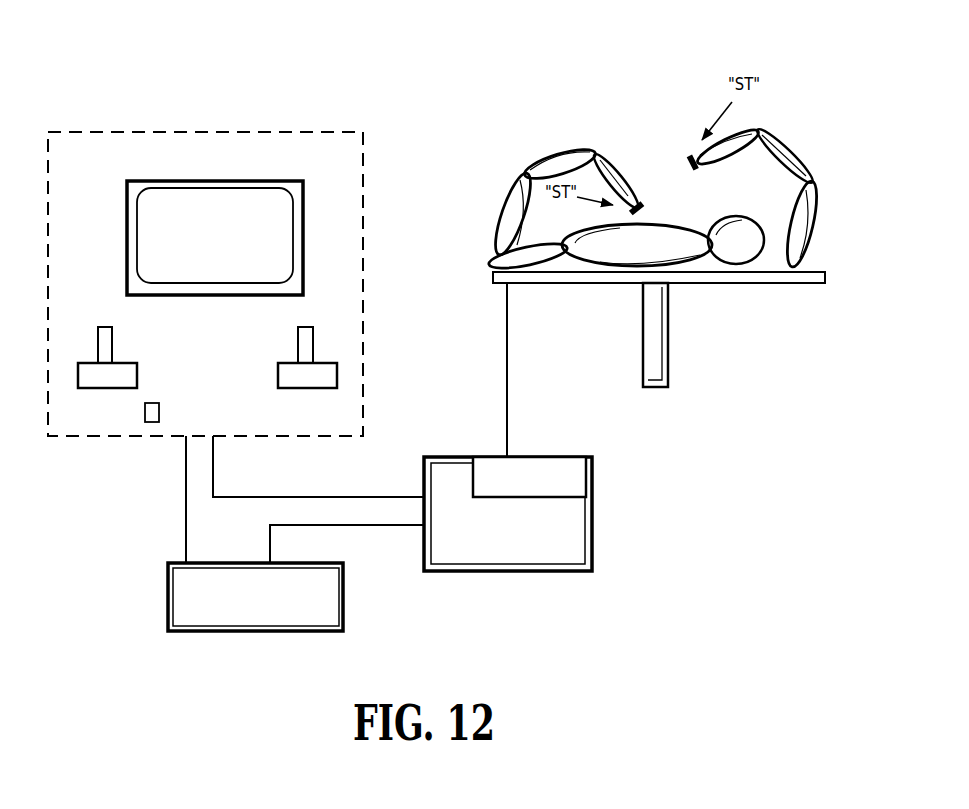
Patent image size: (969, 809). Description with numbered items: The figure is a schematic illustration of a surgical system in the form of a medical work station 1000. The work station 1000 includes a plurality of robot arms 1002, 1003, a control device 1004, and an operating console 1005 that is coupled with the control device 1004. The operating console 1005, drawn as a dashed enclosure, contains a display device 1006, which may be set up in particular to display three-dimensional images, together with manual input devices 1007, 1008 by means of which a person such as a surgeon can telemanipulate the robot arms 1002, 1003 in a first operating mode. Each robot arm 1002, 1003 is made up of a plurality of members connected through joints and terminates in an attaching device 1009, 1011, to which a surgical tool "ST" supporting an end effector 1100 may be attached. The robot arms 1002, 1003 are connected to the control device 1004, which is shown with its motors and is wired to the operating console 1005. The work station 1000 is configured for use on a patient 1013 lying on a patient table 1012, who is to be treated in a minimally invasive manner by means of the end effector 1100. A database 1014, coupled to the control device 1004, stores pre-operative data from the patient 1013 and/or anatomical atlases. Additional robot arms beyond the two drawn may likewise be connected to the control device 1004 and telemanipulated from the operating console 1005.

The medical work station 1000 is at (730, 490).
The robot arm 1002 is at (512, 148).
The robot arm 1003 is at (785, 137).
The control device 1004 is at (492, 534).
The operating console 1005 is at (139, 92).
The display device 1006 is at (200, 245).
The manual input device 1007 is at (90, 378).
The manual input device 1008 is at (307, 378).
The attaching device 1009 is at (640, 200).
The attaching device 1011 is at (693, 160).
The patient table 1012 is at (588, 275).
The patient 1013 is at (672, 248).
The database 1014 is at (248, 605).
The end effector 1100 is at (642, 203).